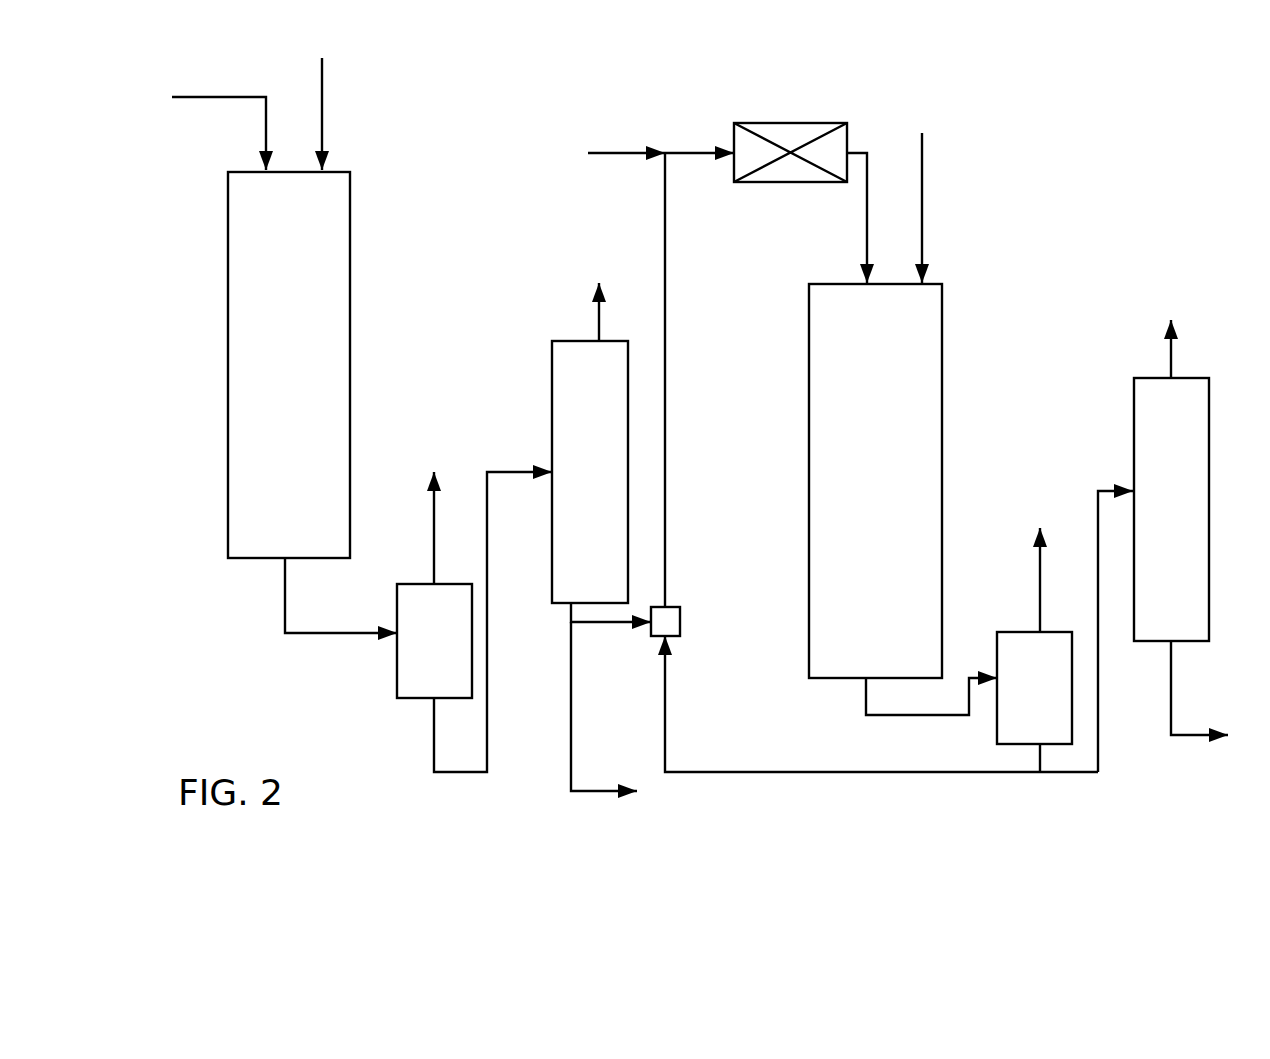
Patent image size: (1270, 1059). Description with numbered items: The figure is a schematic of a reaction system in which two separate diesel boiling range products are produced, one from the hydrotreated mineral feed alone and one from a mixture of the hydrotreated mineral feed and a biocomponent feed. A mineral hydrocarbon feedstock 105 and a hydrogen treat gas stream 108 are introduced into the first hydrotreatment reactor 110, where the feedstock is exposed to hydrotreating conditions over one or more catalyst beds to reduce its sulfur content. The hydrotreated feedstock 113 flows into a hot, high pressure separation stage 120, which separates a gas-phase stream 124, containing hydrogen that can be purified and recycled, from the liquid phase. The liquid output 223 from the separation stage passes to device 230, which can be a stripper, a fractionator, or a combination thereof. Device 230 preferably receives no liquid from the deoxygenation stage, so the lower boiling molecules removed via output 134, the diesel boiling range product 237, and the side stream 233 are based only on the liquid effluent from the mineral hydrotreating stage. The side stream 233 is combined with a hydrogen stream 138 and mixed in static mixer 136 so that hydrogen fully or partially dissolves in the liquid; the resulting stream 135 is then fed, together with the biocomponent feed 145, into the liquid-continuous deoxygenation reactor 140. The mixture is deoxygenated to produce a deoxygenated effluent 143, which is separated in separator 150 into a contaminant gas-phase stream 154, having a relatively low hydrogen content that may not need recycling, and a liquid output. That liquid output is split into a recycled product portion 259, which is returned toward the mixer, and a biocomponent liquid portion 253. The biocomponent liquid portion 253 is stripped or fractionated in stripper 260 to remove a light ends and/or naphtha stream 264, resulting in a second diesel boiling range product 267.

The mineral hydrocarbon feedstock 105 is at (229, 108).
The hydrogen treat gas stream 108 is at (350, 124).
The first hydrotreatment reactor 110 is at (310, 375).
The hydrotreated feedstock 113 is at (267, 621).
The separation stage 120 is at (456, 653).
The gas-phase stream 124 is at (453, 497).
The liquid output 223 is at (418, 751).
The device 230 is at (611, 485).
The output 134 is at (581, 313).
The side stream 233 is at (623, 645).
The diesel boiling range product 237 is at (560, 763).
The hydrogen stream 138 is at (603, 172).
The static mixer 136 is at (773, 198).
The heated stream 135 is at (870, 140).
The biocomponent feed 145 is at (940, 205).
The liquid-continuous deoxygenation reactor 140 is at (896, 495).
The deoxygenated effluent 143 is at (848, 715).
The separator 150 is at (1055, 700).
The contaminant gas-phase stream 154 is at (1017, 548).
The recycled product portion 259 is at (697, 753).
The biocomponent liquid portion 253 is at (1097, 478).
The stripper 260 is at (1192, 522).
The light ends and/or naphtha stream 264 is at (1153, 351).
The second diesel boiling range product 267 is at (1182, 744).